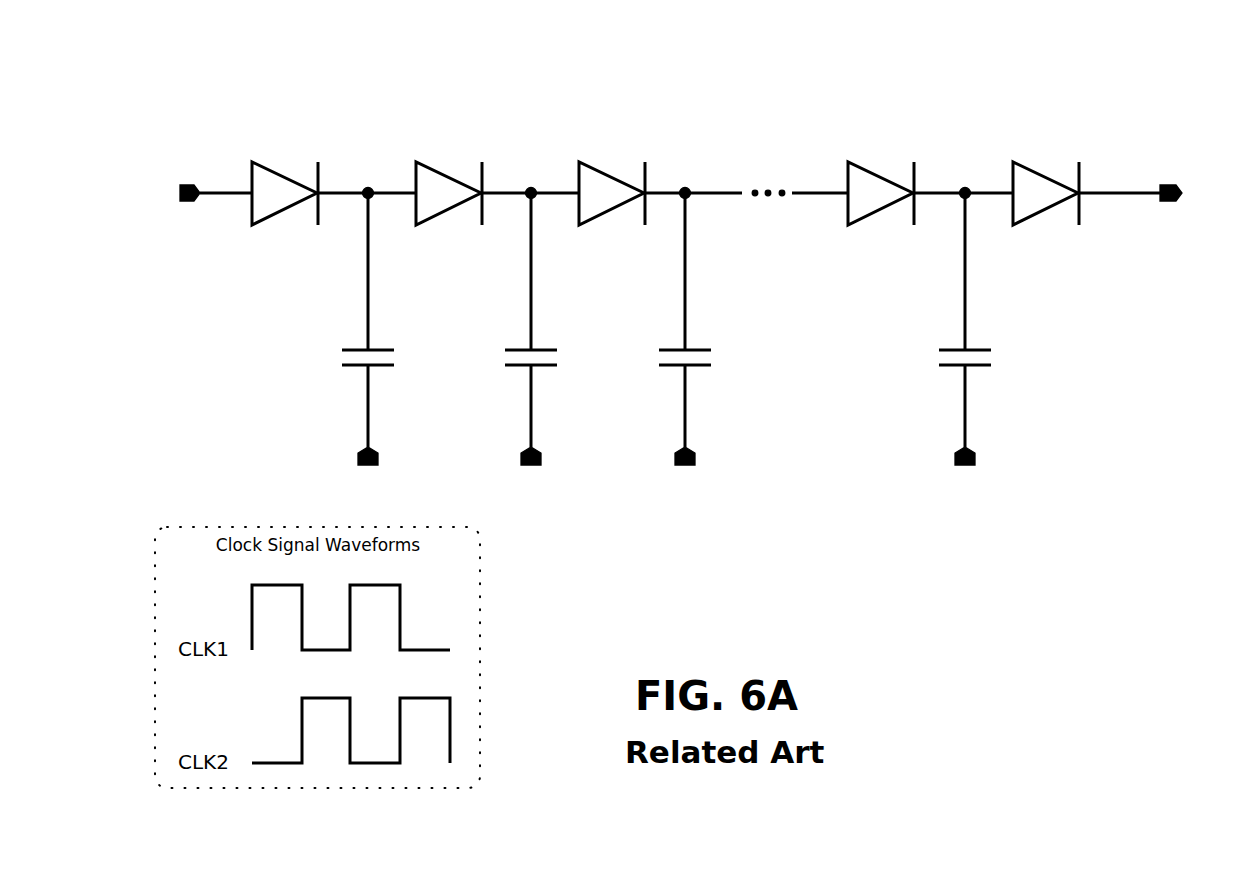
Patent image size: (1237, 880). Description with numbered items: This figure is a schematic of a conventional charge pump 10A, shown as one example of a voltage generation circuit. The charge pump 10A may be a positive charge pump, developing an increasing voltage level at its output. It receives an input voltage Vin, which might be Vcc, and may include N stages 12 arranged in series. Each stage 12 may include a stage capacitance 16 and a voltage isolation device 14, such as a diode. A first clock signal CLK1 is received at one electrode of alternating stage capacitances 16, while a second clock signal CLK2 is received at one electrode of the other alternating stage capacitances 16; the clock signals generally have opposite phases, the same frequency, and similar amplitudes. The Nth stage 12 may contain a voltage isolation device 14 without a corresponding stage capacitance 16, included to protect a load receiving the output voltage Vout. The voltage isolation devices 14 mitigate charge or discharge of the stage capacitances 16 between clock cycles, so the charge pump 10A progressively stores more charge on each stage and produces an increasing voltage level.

The charge pump 10A is at (688, 315).
The stage 12 is at (625, 289).
The voltage isolation device 14 is at (252, 177).
The stage capacitance 16 is at (352, 348).